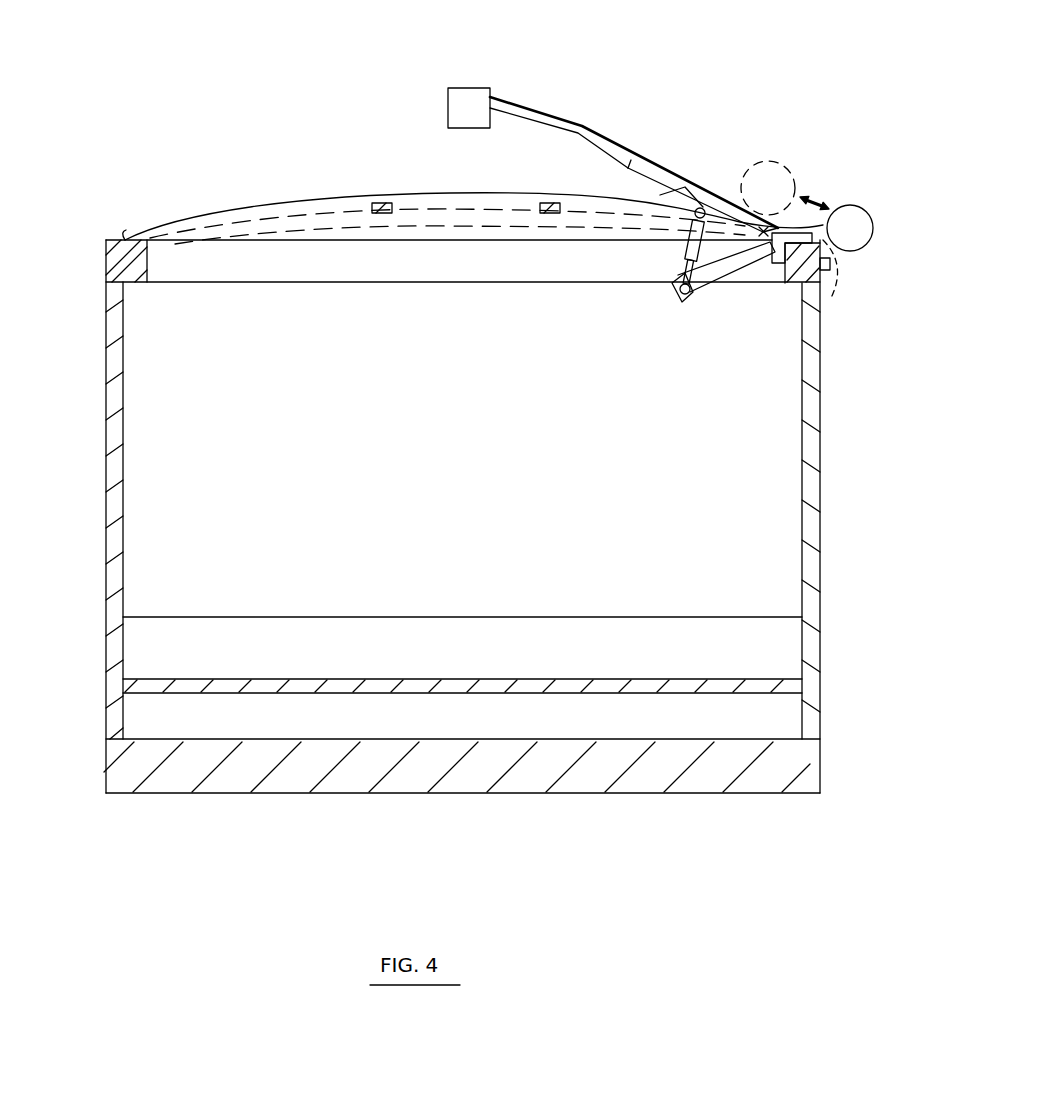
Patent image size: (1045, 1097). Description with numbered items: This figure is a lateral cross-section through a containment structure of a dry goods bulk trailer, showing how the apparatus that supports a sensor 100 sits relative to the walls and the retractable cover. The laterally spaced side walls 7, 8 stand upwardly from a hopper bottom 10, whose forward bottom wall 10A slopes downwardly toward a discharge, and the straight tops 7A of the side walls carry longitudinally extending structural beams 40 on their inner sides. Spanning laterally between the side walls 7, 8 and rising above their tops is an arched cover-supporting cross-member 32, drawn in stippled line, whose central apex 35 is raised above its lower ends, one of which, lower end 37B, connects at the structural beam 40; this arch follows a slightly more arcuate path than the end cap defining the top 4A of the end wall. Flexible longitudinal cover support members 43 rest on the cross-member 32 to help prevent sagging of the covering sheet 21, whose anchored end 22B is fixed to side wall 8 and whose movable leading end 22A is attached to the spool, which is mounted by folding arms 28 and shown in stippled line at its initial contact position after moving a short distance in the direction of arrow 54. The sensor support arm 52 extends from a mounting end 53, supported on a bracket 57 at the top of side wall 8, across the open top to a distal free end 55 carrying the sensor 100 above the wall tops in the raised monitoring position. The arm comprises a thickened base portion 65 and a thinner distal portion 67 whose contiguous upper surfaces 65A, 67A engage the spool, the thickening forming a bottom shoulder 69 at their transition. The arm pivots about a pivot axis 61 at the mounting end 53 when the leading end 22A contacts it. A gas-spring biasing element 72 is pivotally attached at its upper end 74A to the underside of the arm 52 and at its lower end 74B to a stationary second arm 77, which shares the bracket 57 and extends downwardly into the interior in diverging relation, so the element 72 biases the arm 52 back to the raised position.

The top of front wall 4A is at (272, 200).
The side wall 7 is at (105, 466).
The top of side wall 7A is at (128, 236).
The side wall 8 is at (822, 480).
The bottom 10 is at (766, 616).
The forward bottom wall 10A is at (795, 661).
The covering sheet 21 is at (873, 230).
The movable leading end of covering sheet 22A is at (769, 158).
The anchored end of covering sheet 22B is at (832, 298).
The folding arms 28 is at (823, 230).
The arched cover-supporting cross-member 32 is at (206, 226).
The central apex 35 is at (458, 207).
The lower end of cross-member 37B is at (150, 258).
The structural beam 40 is at (122, 262).
The longitudinal cover support member 43 is at (540, 202).
The sensor support arm 52 is at (674, 166).
The mounting end 53 is at (770, 247).
The arrow 54 is at (828, 205).
The distal free end 55 is at (496, 92).
The bracket 57 is at (786, 266).
The pivot axis 61 is at (755, 222).
The base portion 65 is at (695, 178).
The upper surface of base portion 65A is at (682, 167).
The distal portion 67 is at (597, 125).
The upper surface of distal portion 67A is at (638, 150).
The bottom shoulder 69 is at (622, 161).
The biasing element 72 is at (688, 222).
The upper end of biasing element 74A is at (678, 190).
The lower end of biasing element 74B is at (688, 296).
The stationary second arm 77 is at (734, 270).
The sensor 100 is at (466, 88).